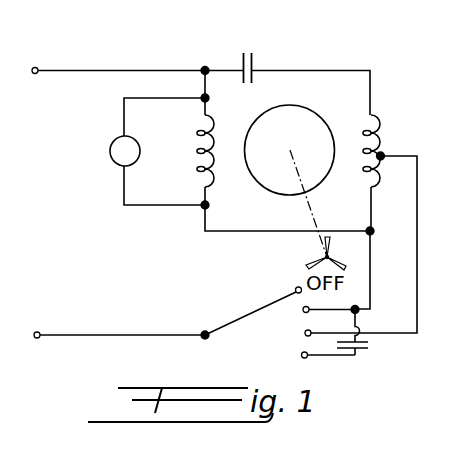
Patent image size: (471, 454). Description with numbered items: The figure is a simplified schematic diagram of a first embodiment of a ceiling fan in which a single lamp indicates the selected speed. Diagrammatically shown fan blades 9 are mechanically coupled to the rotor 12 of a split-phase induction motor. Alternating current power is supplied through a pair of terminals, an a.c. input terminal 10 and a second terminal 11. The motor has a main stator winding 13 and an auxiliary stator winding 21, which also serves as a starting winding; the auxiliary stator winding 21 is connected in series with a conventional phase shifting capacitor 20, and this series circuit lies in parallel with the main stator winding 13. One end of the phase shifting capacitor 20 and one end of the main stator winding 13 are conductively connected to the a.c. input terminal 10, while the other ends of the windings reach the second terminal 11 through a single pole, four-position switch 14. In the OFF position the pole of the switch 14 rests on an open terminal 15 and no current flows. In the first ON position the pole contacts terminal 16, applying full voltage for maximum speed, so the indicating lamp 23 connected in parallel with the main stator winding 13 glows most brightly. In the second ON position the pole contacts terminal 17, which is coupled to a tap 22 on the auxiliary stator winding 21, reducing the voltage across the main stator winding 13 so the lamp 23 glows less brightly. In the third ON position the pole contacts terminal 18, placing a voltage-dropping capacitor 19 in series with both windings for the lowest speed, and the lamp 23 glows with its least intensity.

The fan blades 9 is at (335, 256).
The a.c. input terminal 10 is at (36, 68).
The second terminal of the a.c. source 11 is at (38, 332).
The rotor 12 is at (317, 124).
The main stator winding 13 is at (200, 169).
The single pole, four-position switch 14 is at (236, 288).
The open or rest terminal 15 is at (296, 288).
The terminal 16 is at (298, 310).
The terminal 17 is at (300, 333).
The terminal 18 is at (300, 356).
The voltage-dropping capacitor 19 is at (370, 344).
The phase shifting capacitor 20 is at (245, 53).
The auxiliary stator winding 21 is at (382, 130).
The tap 22 is at (383, 153).
The indicating lamp 23 is at (111, 159).